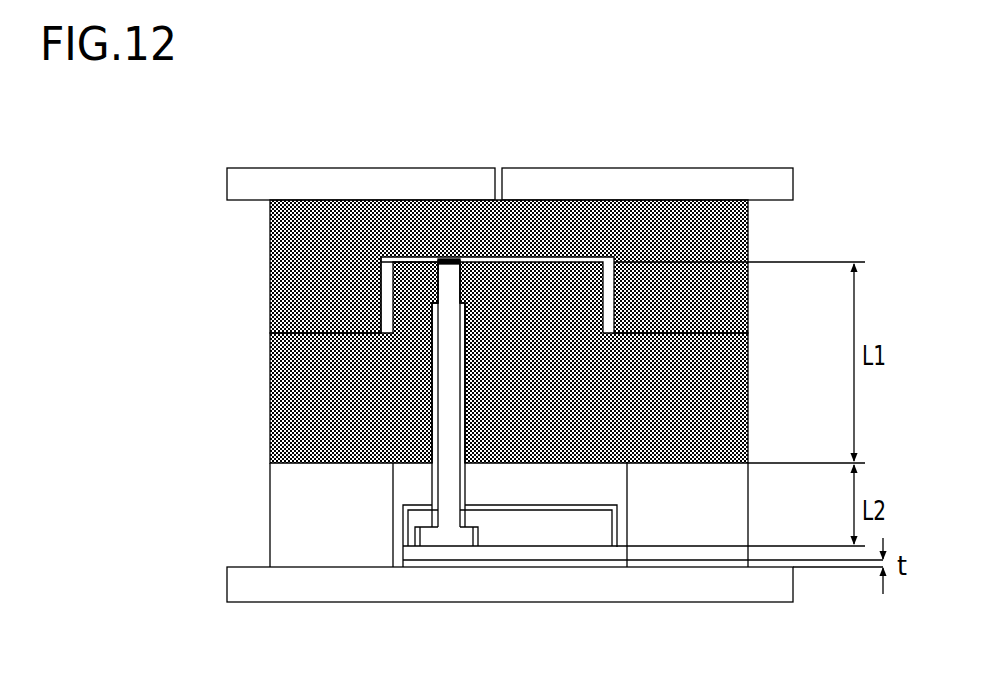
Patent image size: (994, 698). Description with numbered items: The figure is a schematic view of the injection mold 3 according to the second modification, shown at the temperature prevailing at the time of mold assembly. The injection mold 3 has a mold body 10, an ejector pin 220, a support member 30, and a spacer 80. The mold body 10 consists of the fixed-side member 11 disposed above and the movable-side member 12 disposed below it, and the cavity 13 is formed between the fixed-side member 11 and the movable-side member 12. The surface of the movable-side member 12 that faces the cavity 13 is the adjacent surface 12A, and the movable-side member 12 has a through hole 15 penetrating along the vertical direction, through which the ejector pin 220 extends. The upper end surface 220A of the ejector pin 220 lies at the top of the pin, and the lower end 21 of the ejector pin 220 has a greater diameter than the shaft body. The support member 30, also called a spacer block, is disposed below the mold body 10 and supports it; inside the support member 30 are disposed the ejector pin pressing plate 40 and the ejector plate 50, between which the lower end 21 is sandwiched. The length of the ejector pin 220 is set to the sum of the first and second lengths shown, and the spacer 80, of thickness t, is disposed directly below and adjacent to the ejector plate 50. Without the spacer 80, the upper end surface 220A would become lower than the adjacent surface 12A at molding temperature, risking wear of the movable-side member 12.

The injection mold 3 is at (190, 122).
The mold body 10 is at (457, 331).
The fixed-side member 11 is at (270, 312).
The movable-side member 12 is at (208, 296).
The adjacent surface 12A is at (466, 260).
The cavity 13 is at (383, 261).
The through hole 15 is at (437, 328).
The ejector pin 220 is at (440, 430).
The upper end surface 220A is at (435, 259).
The lower end 21 is at (452, 543).
The support member 30 is at (277, 523).
The ejector pin pressing plate 40 is at (540, 532).
The ejector plate 50 is at (492, 552).
The spacer 80 is at (415, 563).